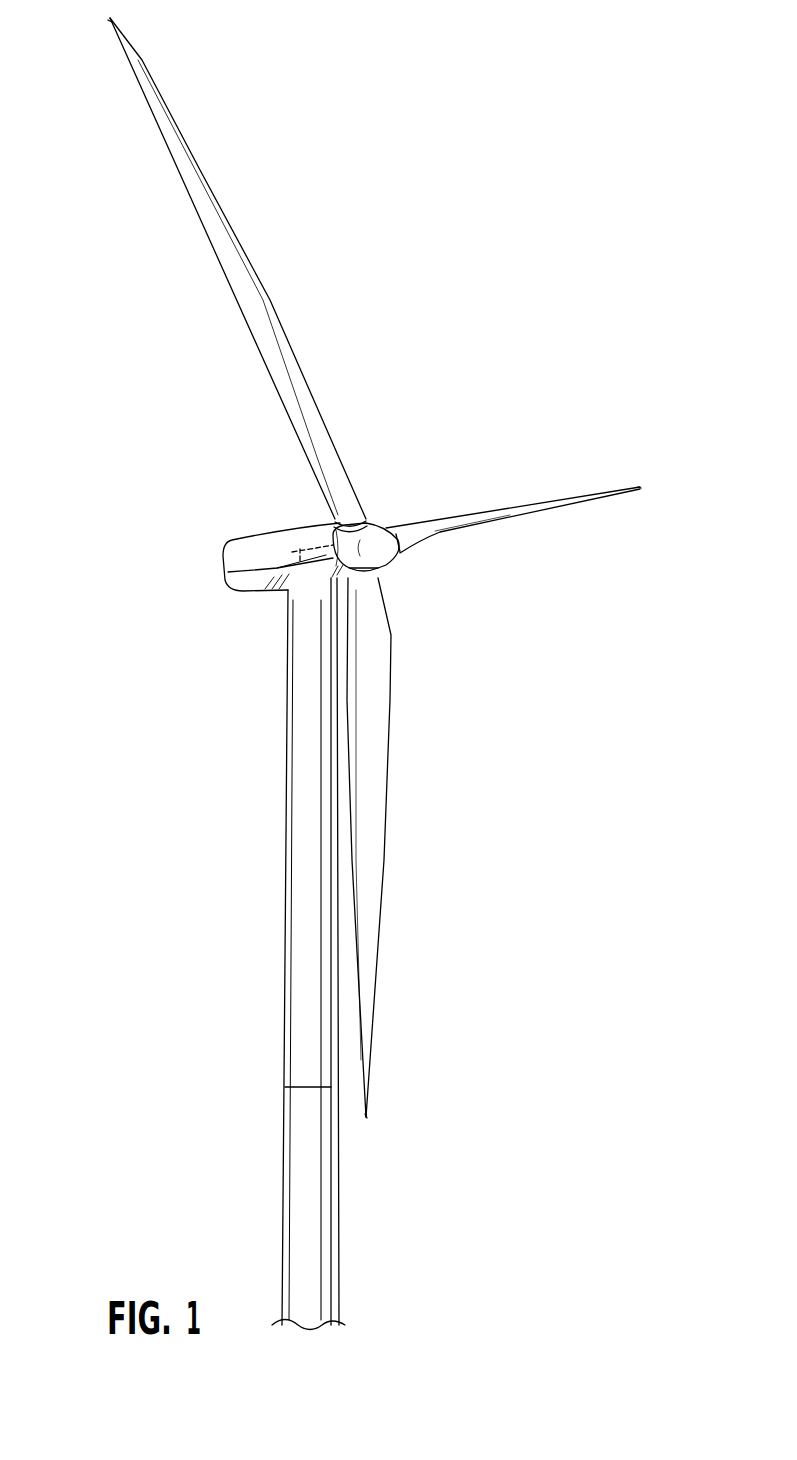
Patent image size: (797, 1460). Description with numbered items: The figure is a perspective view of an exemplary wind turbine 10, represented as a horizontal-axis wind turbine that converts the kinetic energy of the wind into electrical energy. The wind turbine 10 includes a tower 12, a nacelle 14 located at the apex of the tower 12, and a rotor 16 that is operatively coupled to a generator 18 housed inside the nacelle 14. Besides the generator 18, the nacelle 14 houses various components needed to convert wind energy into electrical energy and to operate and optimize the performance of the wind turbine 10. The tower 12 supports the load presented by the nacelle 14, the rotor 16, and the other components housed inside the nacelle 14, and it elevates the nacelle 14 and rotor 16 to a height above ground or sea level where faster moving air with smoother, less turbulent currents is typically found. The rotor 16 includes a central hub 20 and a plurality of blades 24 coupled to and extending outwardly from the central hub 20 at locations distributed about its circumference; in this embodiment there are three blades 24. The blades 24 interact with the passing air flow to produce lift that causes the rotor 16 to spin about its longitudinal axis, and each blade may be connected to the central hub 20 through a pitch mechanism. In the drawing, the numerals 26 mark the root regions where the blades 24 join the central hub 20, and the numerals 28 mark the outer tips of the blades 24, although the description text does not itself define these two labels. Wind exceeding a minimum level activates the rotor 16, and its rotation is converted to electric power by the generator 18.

The wind turbine 10 is at (461, 190).
The tower 12 is at (285, 936).
The nacelle 14 is at (227, 541).
The rotor 16 is at (391, 566).
The generator 18 is at (275, 568).
The central hub 20 is at (374, 526).
The blades 24 is at (194, 210).
The blade root 26 is at (331, 517).
The blade tip 28 is at (110, 18).